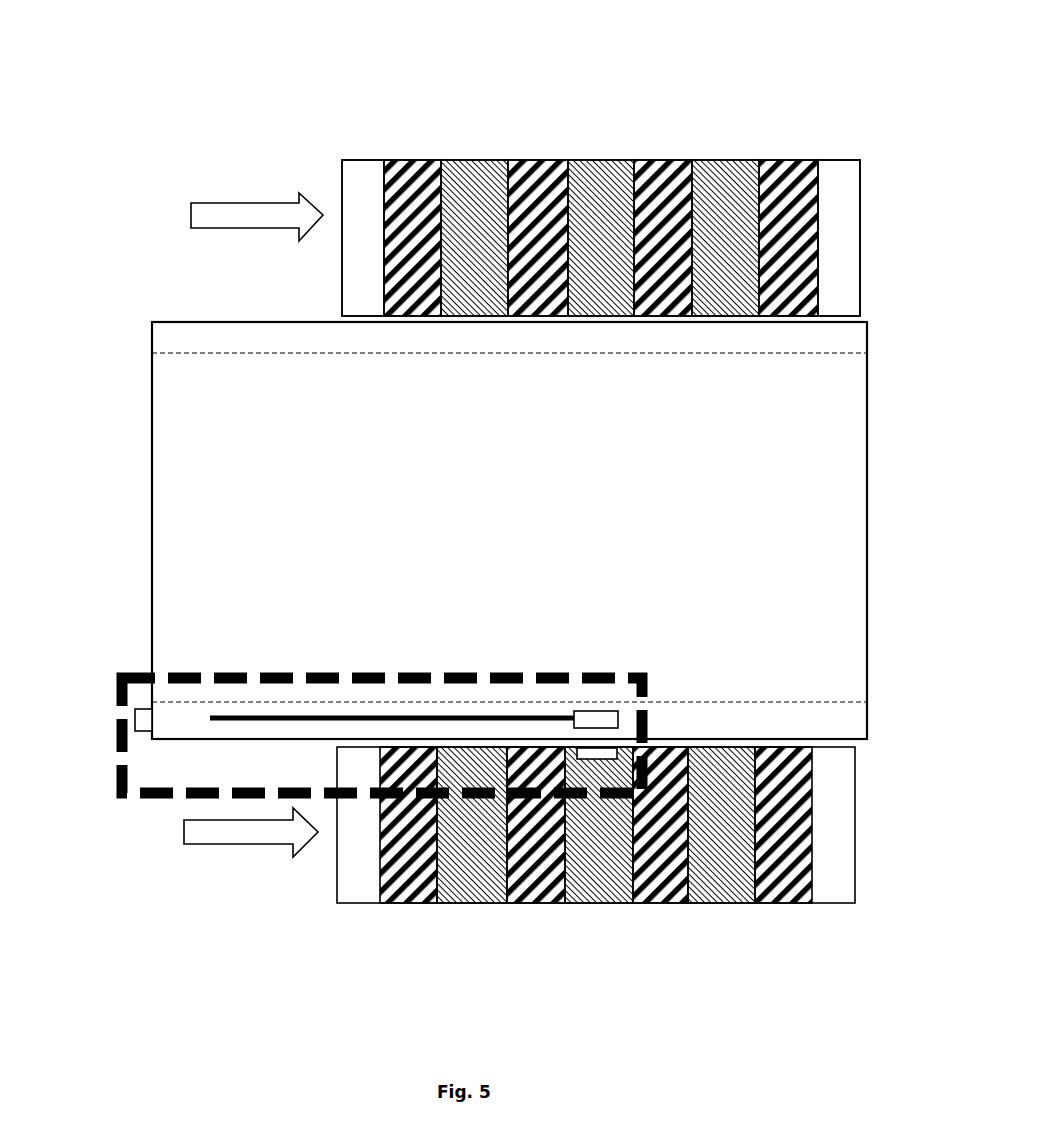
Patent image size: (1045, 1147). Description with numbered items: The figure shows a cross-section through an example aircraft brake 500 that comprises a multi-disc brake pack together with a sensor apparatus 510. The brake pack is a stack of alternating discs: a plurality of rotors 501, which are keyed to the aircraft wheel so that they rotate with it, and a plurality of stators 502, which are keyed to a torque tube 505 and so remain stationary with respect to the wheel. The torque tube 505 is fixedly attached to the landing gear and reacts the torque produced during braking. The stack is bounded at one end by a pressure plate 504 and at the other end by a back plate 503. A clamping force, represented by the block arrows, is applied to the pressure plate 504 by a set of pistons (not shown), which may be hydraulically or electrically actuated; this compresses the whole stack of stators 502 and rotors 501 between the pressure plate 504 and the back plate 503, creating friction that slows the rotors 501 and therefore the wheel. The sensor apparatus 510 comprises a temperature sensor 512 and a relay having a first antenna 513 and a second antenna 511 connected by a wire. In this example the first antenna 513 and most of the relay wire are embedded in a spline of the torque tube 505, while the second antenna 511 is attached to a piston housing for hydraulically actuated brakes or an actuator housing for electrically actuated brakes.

The aircraft brake 500 is at (174, 59).
The rotors 501 is at (415, 203).
The stators 502 is at (475, 200).
The back plate 503 is at (842, 228).
The pressure plate 504 is at (362, 198).
The torque tube 505 is at (554, 530).
The sensor apparatus 510 is at (331, 672).
The second antenna 511 is at (143, 720).
The temperature sensor 512 is at (594, 760).
The first antenna 513 is at (598, 716).